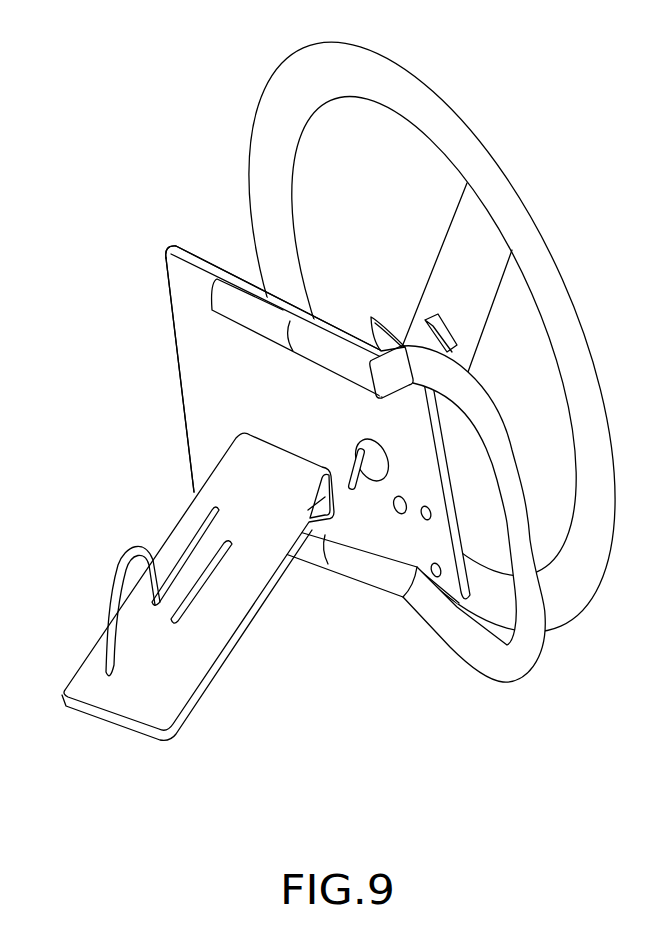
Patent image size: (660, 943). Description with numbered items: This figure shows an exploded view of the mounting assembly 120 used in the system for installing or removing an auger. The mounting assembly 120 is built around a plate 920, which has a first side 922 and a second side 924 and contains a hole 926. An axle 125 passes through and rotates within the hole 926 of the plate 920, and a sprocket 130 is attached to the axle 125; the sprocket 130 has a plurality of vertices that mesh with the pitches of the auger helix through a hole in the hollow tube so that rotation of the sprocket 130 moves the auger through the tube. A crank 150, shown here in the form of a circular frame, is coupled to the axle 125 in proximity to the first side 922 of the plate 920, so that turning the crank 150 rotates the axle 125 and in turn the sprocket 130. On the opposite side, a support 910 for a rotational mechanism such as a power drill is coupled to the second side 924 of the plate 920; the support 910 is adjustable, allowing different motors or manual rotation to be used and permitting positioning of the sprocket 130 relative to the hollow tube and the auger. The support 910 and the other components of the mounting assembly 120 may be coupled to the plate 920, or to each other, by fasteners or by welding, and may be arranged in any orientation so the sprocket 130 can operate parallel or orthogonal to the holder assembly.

The crank 150 is at (510, 195).
The plate 920 is at (202, 348).
The mounting assembly 120 is at (178, 318).
The first side 922 is at (183, 246).
The second side 924 is at (170, 270).
The hole 926 is at (388, 456).
The sprocket 130 is at (371, 314).
The axle 125 is at (378, 490).
The support 910 is at (192, 660).